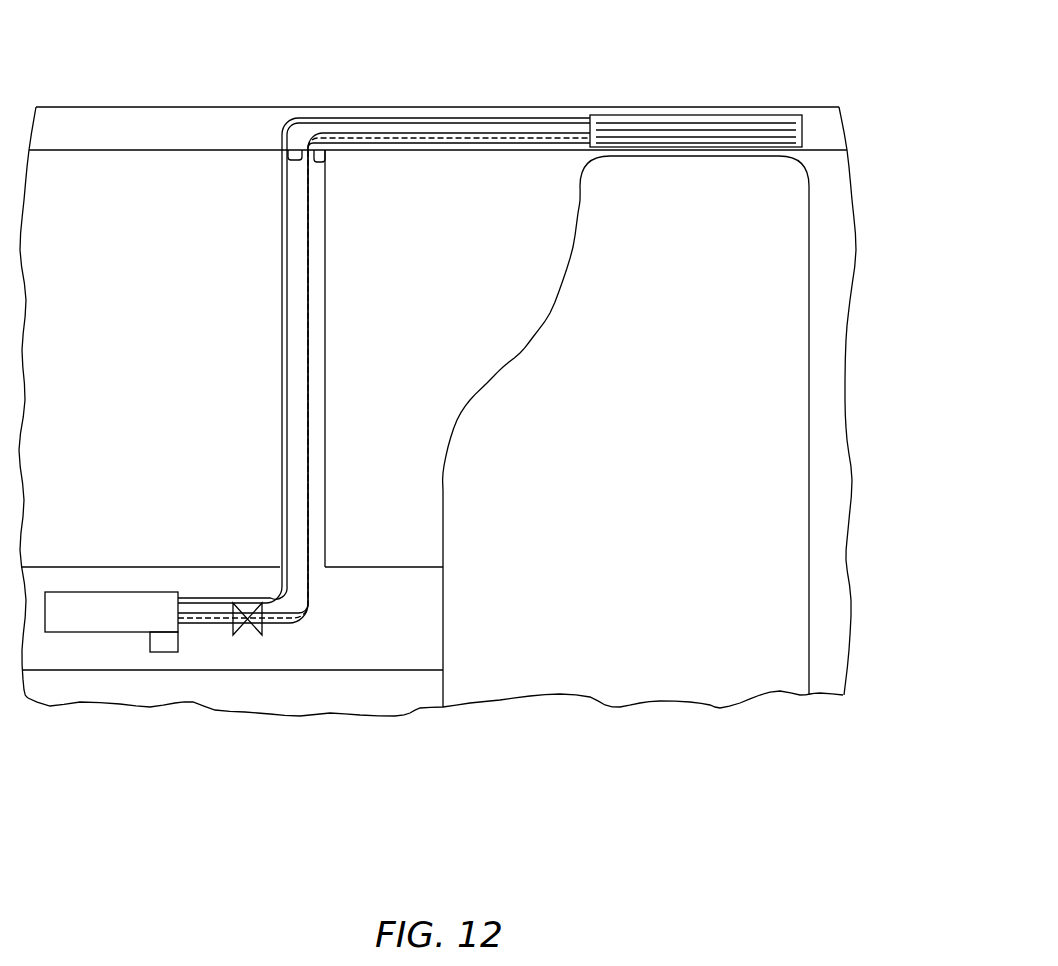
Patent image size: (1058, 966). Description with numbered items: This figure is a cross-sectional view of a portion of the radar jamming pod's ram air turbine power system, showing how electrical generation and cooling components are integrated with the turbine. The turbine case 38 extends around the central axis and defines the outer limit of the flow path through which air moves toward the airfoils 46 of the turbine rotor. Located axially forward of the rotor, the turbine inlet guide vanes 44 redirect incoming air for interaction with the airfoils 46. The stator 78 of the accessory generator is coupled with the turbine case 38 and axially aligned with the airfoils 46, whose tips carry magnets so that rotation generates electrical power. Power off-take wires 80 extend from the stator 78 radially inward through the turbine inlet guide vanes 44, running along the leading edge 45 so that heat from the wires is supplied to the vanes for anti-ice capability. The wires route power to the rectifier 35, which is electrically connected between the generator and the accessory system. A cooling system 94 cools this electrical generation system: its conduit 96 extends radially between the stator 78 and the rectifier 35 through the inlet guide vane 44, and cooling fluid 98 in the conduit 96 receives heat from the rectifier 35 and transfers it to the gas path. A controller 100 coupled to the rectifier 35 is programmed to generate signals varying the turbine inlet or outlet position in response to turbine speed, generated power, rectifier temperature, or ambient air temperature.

The turbine case 38 is at (170, 106).
The power off-take wires 80 is at (282, 120).
The stator 78 is at (808, 133).
The airfoils 46 is at (745, 385).
The turbine inlet guide vanes 44 is at (335, 255).
The leading edge 45 is at (280, 360).
The cooling system 94 is at (335, 487).
The cooling fluid 98 is at (388, 137).
The conduit 96 is at (300, 627).
The rectifier 35 is at (107, 610).
The controller 100 is at (145, 643).